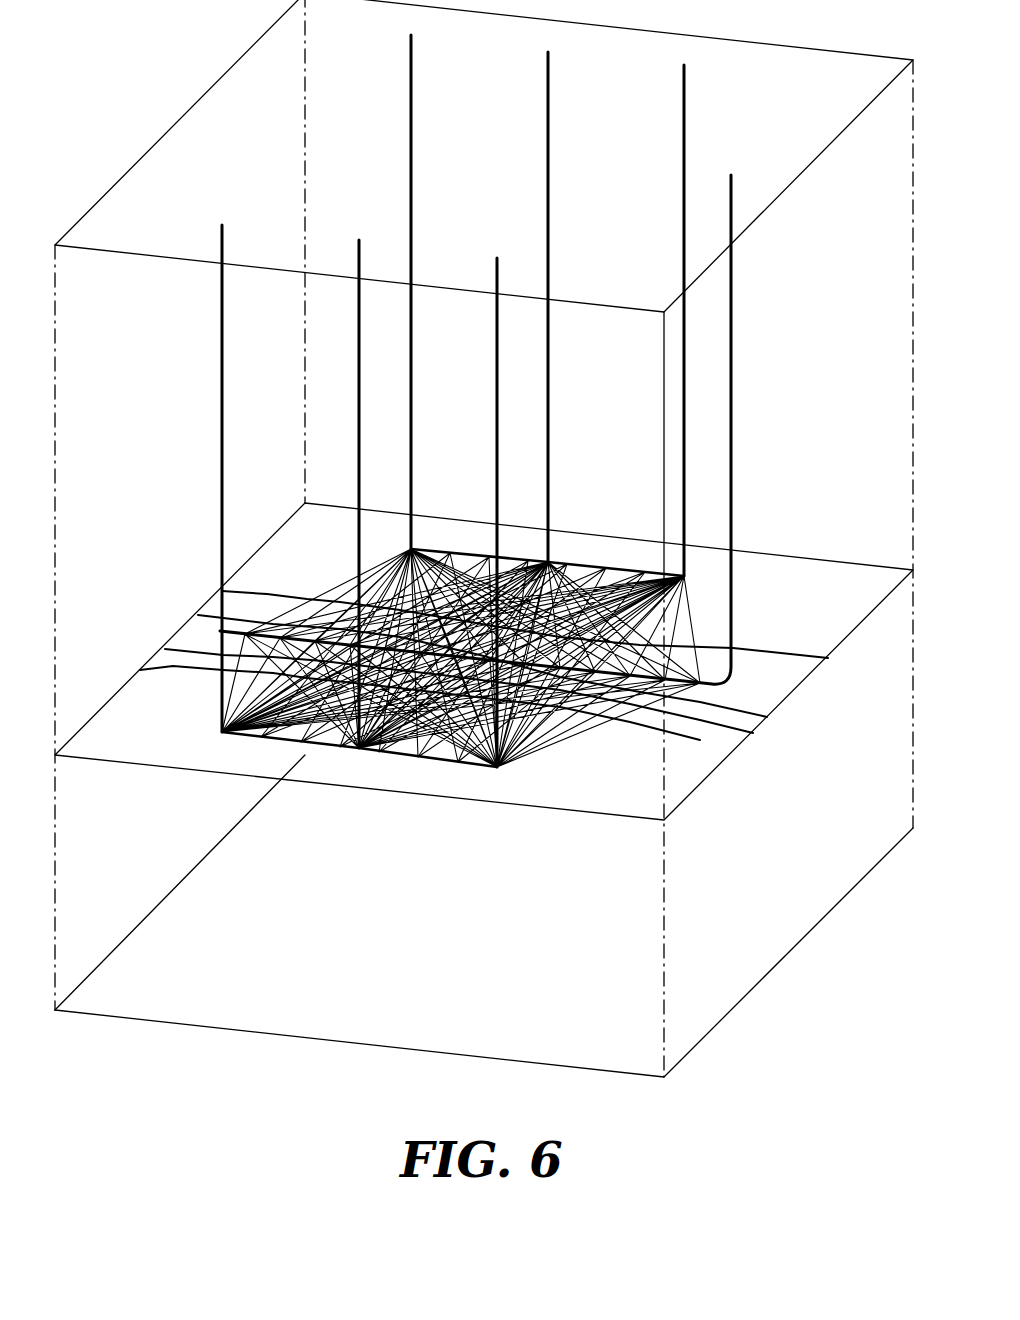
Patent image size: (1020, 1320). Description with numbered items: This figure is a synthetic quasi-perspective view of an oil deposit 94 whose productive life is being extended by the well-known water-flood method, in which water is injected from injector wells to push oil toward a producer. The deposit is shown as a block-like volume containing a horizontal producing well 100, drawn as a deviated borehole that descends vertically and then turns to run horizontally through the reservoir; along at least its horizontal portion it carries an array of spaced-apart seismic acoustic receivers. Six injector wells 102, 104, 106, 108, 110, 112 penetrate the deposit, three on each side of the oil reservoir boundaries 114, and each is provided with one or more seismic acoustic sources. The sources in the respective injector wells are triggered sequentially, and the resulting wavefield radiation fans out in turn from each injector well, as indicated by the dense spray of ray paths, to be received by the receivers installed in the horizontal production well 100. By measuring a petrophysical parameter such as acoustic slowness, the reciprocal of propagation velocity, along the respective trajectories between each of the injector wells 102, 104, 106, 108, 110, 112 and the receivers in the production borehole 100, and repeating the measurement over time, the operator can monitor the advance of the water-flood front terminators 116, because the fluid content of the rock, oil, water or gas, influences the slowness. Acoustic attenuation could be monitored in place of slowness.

The oil deposit 94 is at (203, 713).
The horizontal producing well 100 is at (736, 491).
The injector well 102 is at (224, 738).
The injector well 104 is at (362, 752).
The injector well 106 is at (500, 770).
The injector well 108 is at (405, 548).
The injector well 110 is at (543, 560).
The injector well 112 is at (680, 574).
The oil reservoir boundaries 114 is at (752, 646).
The water-flood front terminators 116 is at (765, 663).